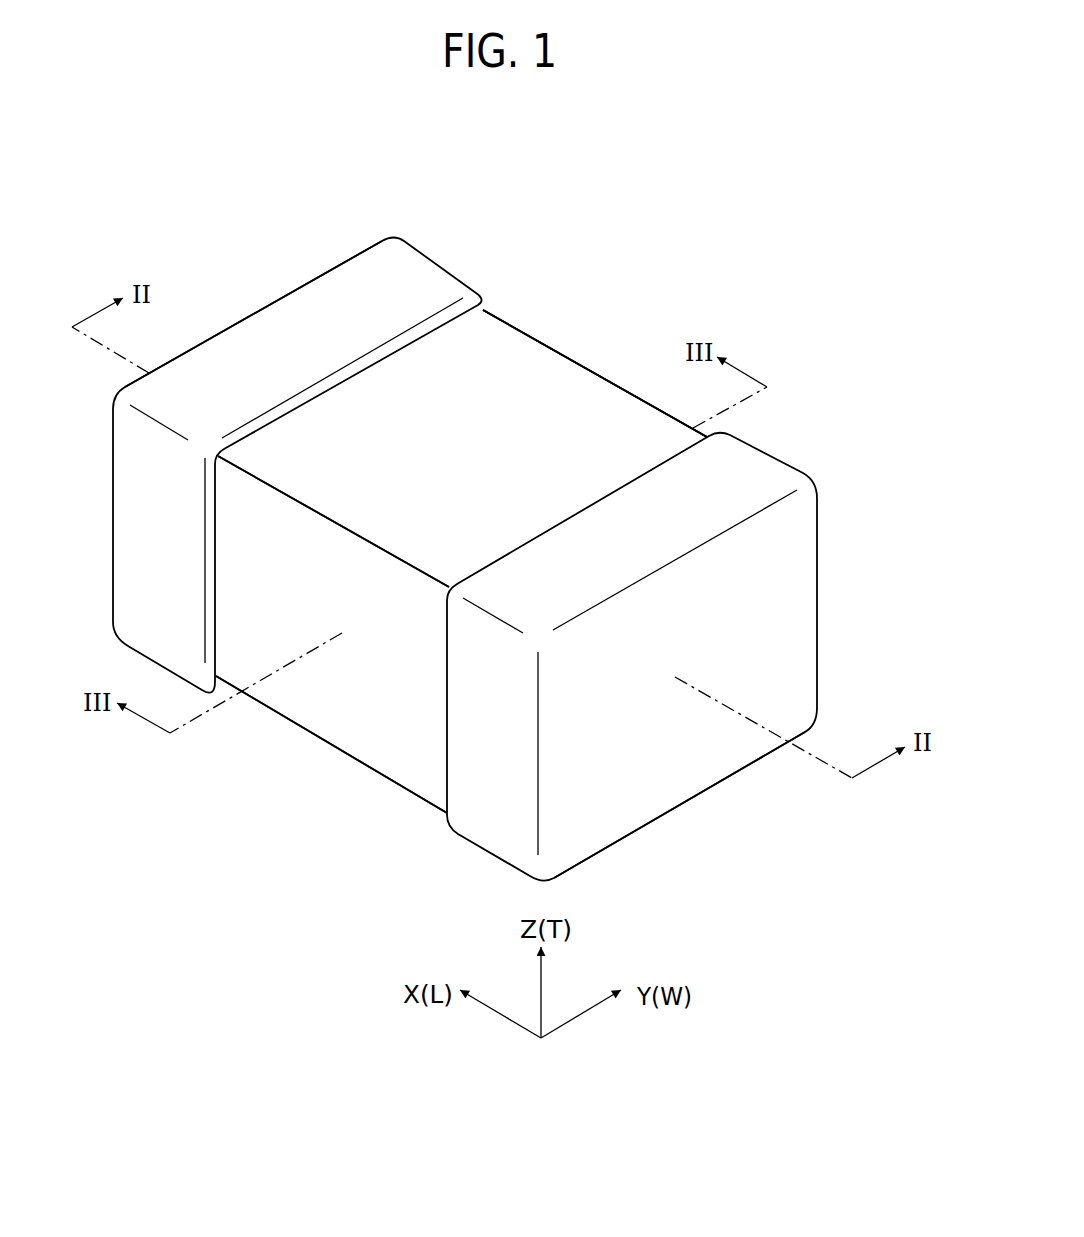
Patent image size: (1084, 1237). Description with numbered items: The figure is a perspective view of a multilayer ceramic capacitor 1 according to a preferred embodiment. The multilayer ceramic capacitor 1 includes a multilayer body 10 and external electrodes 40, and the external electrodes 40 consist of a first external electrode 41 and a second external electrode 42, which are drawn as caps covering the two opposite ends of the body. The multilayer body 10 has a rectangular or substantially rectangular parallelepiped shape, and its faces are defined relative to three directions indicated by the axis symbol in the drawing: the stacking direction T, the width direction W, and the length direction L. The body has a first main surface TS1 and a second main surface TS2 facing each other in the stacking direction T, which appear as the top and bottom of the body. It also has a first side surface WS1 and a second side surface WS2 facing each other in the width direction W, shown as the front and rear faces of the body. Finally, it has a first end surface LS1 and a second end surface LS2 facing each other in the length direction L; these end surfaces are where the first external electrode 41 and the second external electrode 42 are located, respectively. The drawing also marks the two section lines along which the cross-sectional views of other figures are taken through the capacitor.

The multilayer ceramic capacitor 1 is at (850, 313).
The multilayer body 10 is at (463, 390).
The external electrodes 40 is at (493, 546).
The first external electrode 41 is at (397, 270).
The second external electrode 42 is at (767, 470).
The first end surface LS1 is at (265, 298).
The second end surface LS2 is at (668, 773).
The first main surface TS1 is at (518, 430).
The second main surface TS2 is at (300, 718).
The first side surface WS1 is at (393, 755).
The second side surface WS2 is at (623, 390).